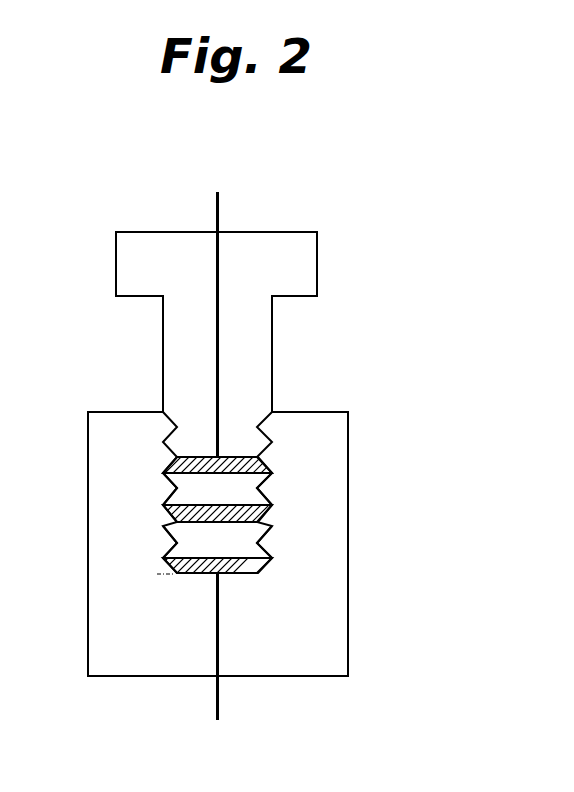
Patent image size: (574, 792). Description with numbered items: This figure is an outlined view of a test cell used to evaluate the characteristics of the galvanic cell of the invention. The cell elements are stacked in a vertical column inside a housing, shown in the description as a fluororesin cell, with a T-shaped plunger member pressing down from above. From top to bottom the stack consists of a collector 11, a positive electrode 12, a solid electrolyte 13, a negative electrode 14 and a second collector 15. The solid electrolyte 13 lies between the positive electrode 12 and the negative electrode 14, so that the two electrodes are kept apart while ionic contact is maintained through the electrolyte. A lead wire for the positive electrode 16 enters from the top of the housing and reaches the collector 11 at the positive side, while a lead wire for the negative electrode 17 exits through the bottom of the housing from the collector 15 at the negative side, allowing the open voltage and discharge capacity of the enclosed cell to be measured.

The collector 11 is at (257, 463).
The positive electrode 12 is at (268, 493).
The solid electrolyte 13 is at (257, 517).
The negative electrode 14 is at (267, 544).
The collector 15 is at (263, 568).
The lead wire for the positive electrode 16 is at (219, 205).
The lead wire for the negative electrode 17 is at (220, 695).